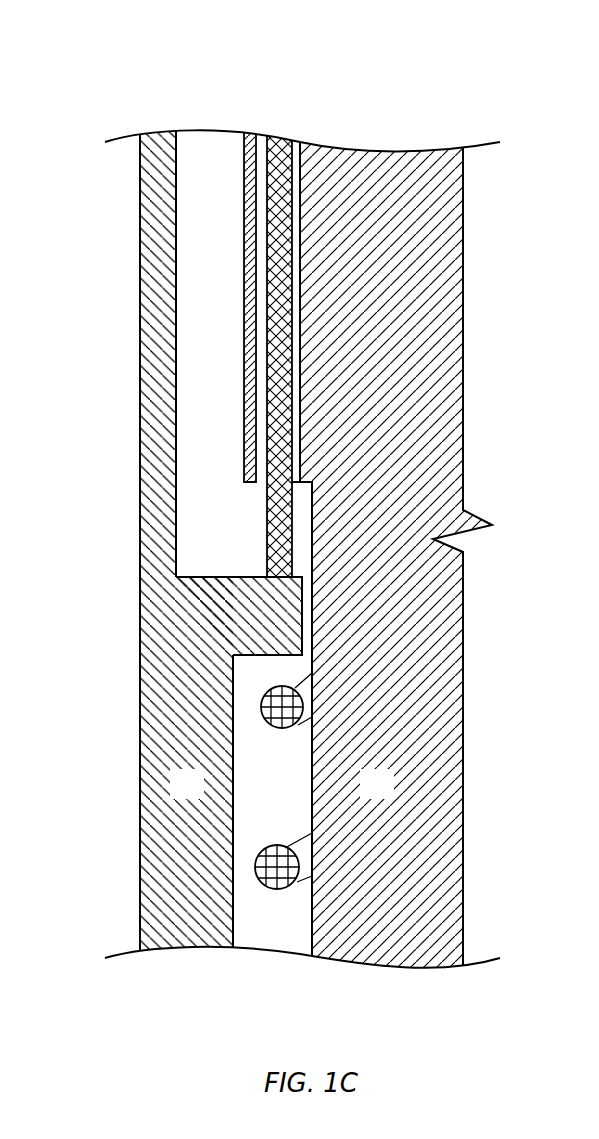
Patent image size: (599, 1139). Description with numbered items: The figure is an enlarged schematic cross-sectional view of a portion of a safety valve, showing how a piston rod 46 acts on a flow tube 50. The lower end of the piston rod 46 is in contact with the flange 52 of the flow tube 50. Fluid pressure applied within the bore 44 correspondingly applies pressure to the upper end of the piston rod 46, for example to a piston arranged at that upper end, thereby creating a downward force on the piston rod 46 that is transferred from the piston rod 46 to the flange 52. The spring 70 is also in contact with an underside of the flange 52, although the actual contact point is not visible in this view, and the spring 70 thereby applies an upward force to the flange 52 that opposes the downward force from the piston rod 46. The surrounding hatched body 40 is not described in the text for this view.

The outer housing 40 is at (362, 795).
The bore 44 is at (300, 143).
The piston rod 46 is at (278, 423).
The flow tube 50 is at (172, 795).
The flange 52 is at (282, 611).
The spring 70 is at (261, 703).